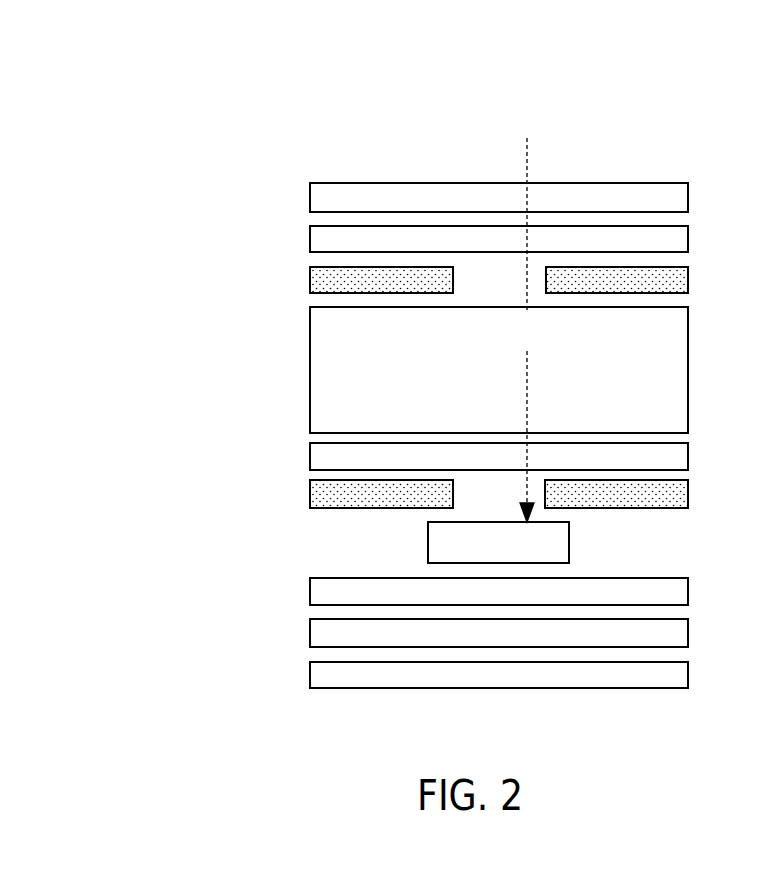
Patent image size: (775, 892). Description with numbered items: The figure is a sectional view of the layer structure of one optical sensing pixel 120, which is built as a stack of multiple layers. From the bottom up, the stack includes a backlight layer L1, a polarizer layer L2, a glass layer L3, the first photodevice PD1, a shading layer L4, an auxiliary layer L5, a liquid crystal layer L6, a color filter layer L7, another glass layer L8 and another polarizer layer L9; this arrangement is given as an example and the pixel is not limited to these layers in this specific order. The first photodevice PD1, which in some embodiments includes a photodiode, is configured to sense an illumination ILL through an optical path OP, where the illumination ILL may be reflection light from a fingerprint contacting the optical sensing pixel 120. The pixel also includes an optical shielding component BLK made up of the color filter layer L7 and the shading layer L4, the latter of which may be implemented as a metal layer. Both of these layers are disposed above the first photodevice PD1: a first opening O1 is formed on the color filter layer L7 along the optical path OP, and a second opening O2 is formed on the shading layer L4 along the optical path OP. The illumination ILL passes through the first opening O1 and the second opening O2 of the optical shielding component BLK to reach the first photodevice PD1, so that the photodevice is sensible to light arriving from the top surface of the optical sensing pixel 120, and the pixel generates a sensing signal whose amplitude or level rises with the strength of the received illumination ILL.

The optical sensing pixel 120 is at (205, 155).
The polarizer layer L9 is at (300, 184).
The glass layer L8 is at (300, 226).
The color filter layer L7 is at (300, 267).
The liquid crystal layer L6 is at (469, 370).
The auxiliary layer L5 is at (300, 444).
The shading layer L4 is at (300, 481).
The glass layer L3 is at (300, 579).
The polarizer layer L2 is at (300, 620).
The backlight layer L1 is at (300, 663).
The optical shielding component BLK is at (414, 387).
The illumination ILL is at (528, 172).
The optical path OP is at (541, 331).
The first opening O1 is at (545, 277).
The second opening O2 is at (544, 492).
The first photodevice PD1 is at (428, 545).